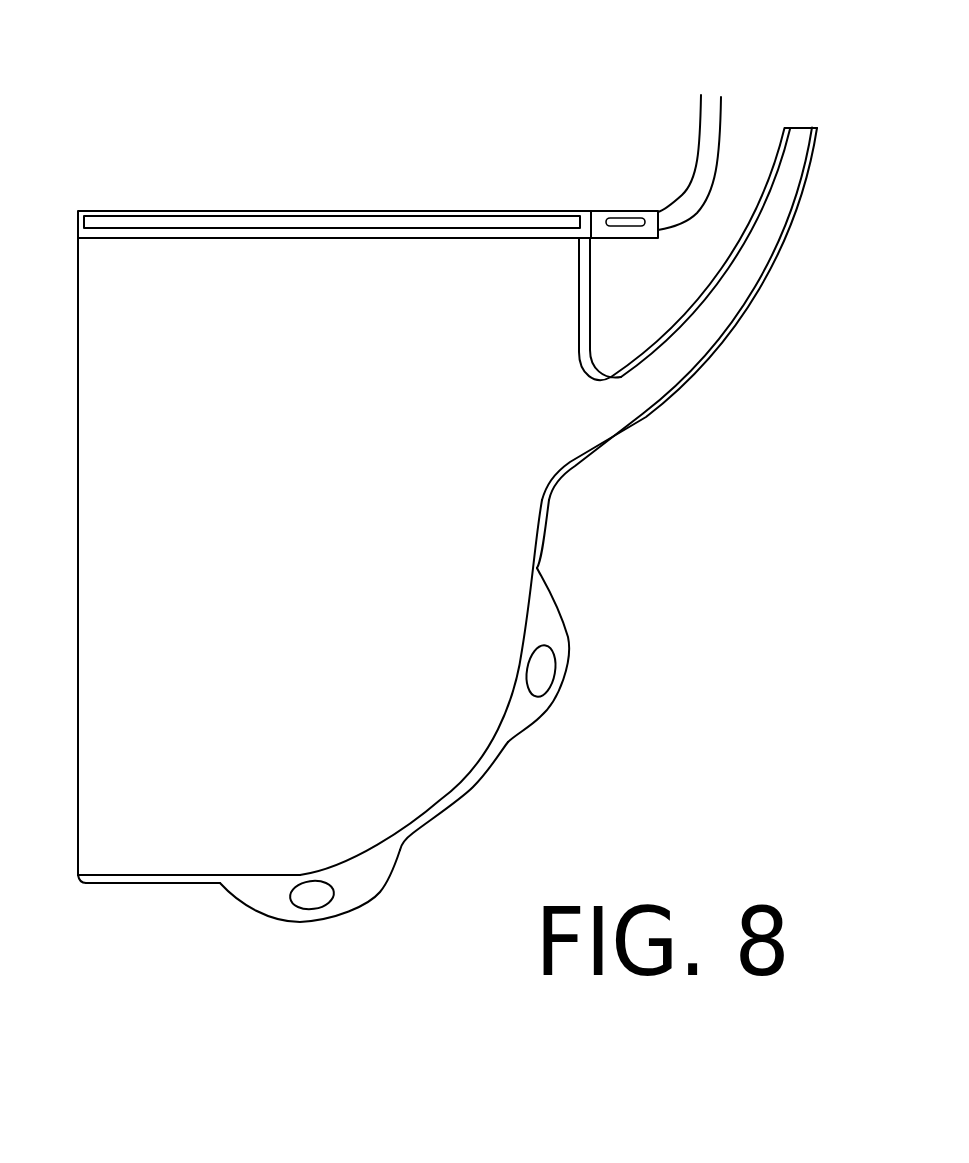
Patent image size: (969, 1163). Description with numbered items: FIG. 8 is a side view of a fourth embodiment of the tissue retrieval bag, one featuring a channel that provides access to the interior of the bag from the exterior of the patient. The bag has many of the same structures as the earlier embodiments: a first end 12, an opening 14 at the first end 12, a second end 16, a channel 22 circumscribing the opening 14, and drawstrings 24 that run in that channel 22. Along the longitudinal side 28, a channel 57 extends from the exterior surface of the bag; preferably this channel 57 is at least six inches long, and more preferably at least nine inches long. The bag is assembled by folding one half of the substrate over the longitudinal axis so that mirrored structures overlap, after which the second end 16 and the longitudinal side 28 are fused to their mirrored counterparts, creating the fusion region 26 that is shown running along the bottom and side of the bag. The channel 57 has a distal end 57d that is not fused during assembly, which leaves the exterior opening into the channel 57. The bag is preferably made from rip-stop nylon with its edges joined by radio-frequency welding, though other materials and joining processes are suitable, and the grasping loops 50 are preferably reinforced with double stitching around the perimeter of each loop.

The first end 12 is at (165, 203).
The opening 14 is at (327, 204).
The second end 16 is at (120, 885).
The channel 22 is at (472, 211).
The drawstrings 24 is at (713, 140).
The fusion region 26 is at (540, 545).
The longitudinal side 28 is at (540, 505).
The grasping loops 50 is at (542, 672).
The channel 57 is at (720, 298).
The distal end 57d is at (806, 133).